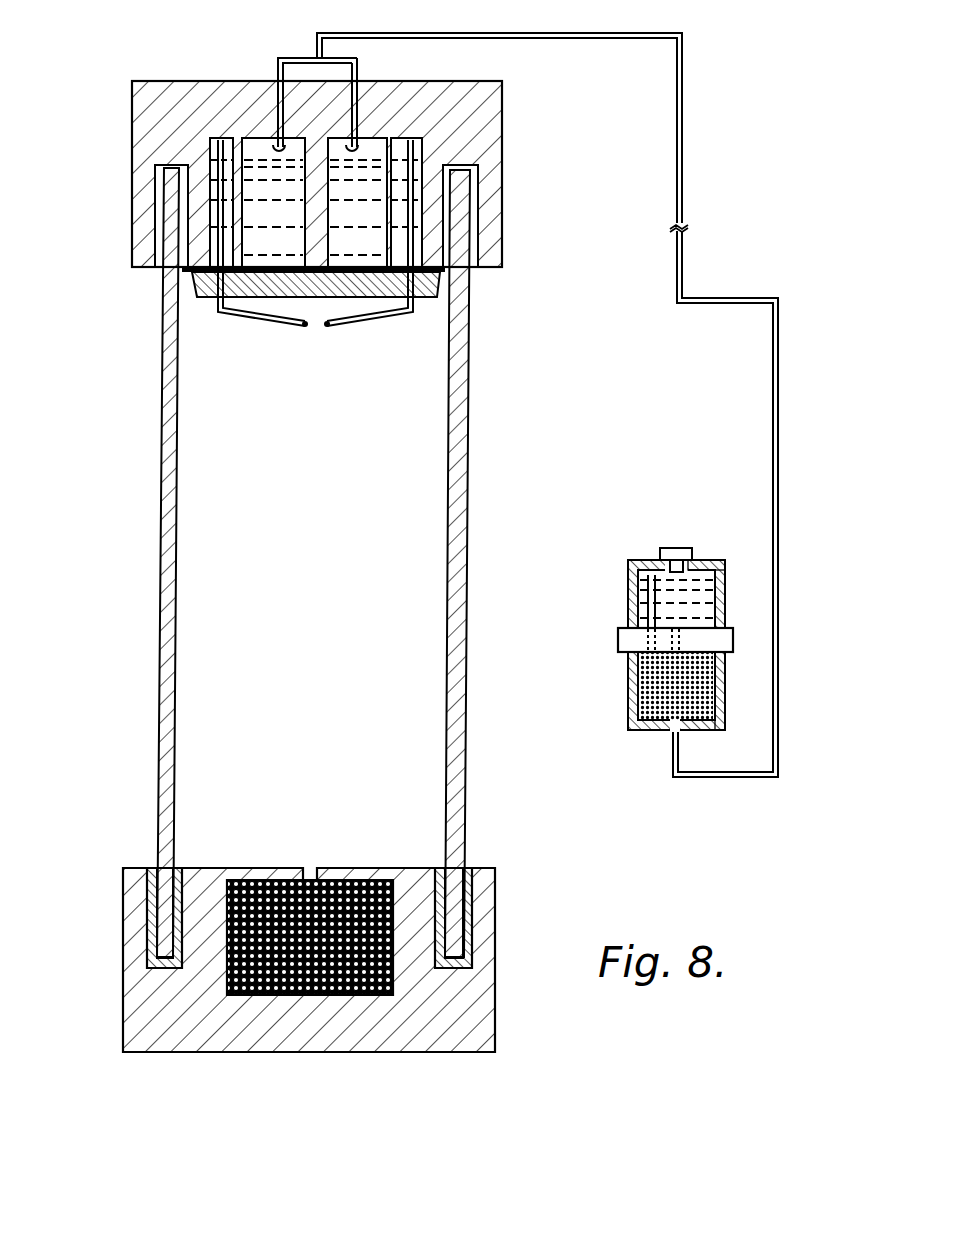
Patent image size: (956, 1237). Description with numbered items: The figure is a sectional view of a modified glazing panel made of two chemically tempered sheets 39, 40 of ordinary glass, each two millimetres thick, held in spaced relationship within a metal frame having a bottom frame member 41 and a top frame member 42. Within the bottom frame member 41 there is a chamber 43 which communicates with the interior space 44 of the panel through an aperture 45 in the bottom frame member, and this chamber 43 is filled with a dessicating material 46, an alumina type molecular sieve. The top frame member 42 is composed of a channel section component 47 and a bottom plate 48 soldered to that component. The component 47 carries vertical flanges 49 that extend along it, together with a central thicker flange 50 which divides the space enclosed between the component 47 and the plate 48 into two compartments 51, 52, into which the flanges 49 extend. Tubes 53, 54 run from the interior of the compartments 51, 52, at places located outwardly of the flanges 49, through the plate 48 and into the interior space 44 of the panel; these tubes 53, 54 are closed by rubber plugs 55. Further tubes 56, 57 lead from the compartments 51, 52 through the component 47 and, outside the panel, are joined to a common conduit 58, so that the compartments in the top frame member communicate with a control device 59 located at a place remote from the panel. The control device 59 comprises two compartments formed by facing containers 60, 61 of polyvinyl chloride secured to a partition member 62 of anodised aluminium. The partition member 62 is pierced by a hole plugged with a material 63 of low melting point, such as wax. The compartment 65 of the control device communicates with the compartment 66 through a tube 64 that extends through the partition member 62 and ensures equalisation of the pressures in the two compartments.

The chemically tempered sheet 39 is at (163, 510).
The chemically tempered sheet 40 is at (457, 510).
The bottom frame member 41 is at (490, 1053).
The top frame member 42 is at (502, 127).
The chamber 43 is at (337, 997).
The interior space 44 is at (277, 537).
The aperture 45 is at (310, 872).
The dessicating material 46 is at (243, 953).
The channel section component 47 is at (165, 123).
The bottom plate 48 is at (195, 288).
The vertical flanges 49 is at (555, 283).
The central thicker flange 50 is at (423, 292).
The compartment 51 is at (258, 148).
The compartment 52 is at (368, 142).
The tube 53 is at (243, 322).
The tube 54 is at (387, 320).
The rubber plugs 55 is at (330, 325).
The tube 56 is at (292, 56).
The tube 57 is at (358, 66).
The common conduit 58 is at (495, 33).
The control device 59 is at (632, 718).
The container 60 is at (630, 677).
The container 61 is at (640, 598).
The partition member 62 is at (633, 640).
The low melting point material 63 is at (682, 627).
The tube 64 is at (632, 562).
The compartment 65 is at (725, 565).
The compartment 66 is at (723, 690).